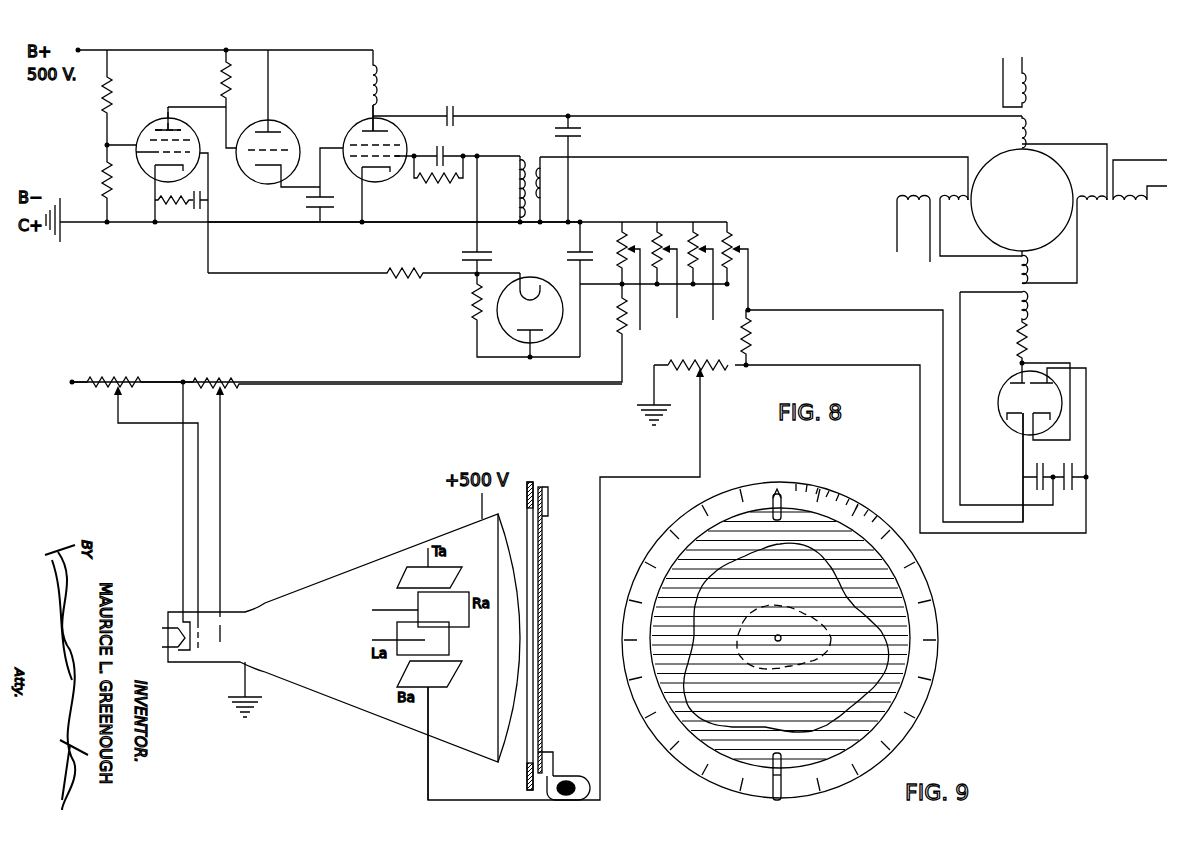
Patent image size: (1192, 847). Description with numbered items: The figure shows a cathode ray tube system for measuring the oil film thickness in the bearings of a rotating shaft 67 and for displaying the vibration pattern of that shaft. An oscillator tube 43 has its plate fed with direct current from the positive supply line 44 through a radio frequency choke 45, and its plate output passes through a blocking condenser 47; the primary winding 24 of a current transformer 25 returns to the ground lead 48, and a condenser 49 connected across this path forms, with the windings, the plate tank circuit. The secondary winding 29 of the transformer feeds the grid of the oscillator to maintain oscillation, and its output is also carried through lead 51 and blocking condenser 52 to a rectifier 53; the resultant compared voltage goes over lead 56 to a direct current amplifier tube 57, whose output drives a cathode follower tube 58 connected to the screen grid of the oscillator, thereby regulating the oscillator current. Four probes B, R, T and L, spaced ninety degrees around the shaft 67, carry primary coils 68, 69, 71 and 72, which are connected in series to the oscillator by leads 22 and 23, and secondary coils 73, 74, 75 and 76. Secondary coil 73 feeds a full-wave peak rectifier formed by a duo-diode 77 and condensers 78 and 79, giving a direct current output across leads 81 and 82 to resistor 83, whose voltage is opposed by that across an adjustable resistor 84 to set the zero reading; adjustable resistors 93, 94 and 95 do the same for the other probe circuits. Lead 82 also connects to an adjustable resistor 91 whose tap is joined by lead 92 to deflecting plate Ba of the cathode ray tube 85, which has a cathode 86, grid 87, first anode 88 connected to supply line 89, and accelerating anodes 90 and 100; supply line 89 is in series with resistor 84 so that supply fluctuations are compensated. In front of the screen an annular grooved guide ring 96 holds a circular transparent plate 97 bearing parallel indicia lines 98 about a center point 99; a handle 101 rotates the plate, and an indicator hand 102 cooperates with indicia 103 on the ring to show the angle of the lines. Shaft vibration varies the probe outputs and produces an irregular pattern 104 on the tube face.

In FIG. 8, the lead 22 is at (815, 157).
In FIG. 8, the lead 23 is at (818, 116).
In FIG. 8, the primary winding 24 is at (543, 192).
In FIG. 8, the current transformer 25 is at (531, 153).
In FIG. 8, the secondary winding 29 is at (516, 180).
In FIG. 8, the oscillator tube 43 is at (397, 138).
In FIG. 8, the positive supply line 44 is at (88, 48).
In FIG. 8, the radio frequency choke 45 is at (380, 88).
In FIG. 8, the blocking condenser 47 is at (456, 108).
In FIG. 8, the ground lead 48 is at (388, 224).
In FIG. 8, the condenser 49 is at (585, 133).
In FIG. 8, the lead 51 is at (477, 193).
In FIG. 8, the blocking condenser 52 is at (488, 254).
In FIG. 8, the rectifier 53 is at (543, 282).
In FIG. 8, the lead 56 is at (308, 272).
In FIG. 8, the direct current amplifier tube 57 is at (160, 120).
In FIG. 8, the cathode follower tube 58 is at (285, 128).
In FIG. 8, the shaft 67 is at (977, 222).
In FIG. 8, the primary coil 68 is at (1030, 270).
In FIG. 8, the primary coil 69 is at (1082, 212).
In FIG. 8, the primary coil 71 is at (1030, 133).
In FIG. 8, the primary coil 72 is at (950, 196).
In FIG. 8, the secondary coil 73 is at (1015, 305).
In FIG. 8, the secondary coil 74 is at (1130, 208).
In FIG. 8, the secondary coil 75 is at (1030, 92).
In FIG. 8, the secondary coil 76 is at (912, 198).
In FIG. 8, the duo-diode 77 is at (1006, 390).
In FIG. 8, the condenser 78 is at (1040, 470).
In FIG. 8, the condenser 79 is at (1070, 492).
In FIG. 8, the lead 81 is at (820, 310).
In FIG. 8, the lead 82 is at (845, 365).
In FIG. 8, the resistor 83 is at (750, 338).
In FIG. 8, the adjustable resistor 84 is at (735, 238).
In FIG. 8, the cathode ray tube 85 is at (365, 567).
In FIG. 8, the cathode 86 is at (185, 657).
In FIG. 8, the grid 87 is at (200, 656).
In FIG. 8, the first anode 88 is at (223, 633).
In FIG. 8, the supply line 89 is at (78, 380).
In FIG. 8, the accelerating anode 90 is at (252, 661).
In FIG. 8, the adjustable resistor 91 is at (697, 360).
In FIG. 8, the lead 92 is at (600, 718).
In FIG. 8, the adjustable resistor 93 is at (700, 232).
In FIG. 8, the adjustable resistor 94 is at (664, 232).
In FIG. 8, the adjustable resistor 95 is at (627, 232).
In FIG. 8, the annular grooved guide ring 96 is at (531, 482).
In FIG. 9, the annular grooved guide ring 96 is at (937, 658).
In FIG. 8, the circular transparent plate 97 is at (542, 543).
In FIG. 9, the circular transparent plate 97 is at (887, 695).
In FIG. 9, the indicia lines 98 is at (897, 625).
In FIG. 9, the center point 99 is at (783, 636).
In FIG. 8, the accelerating anode 100 is at (490, 756).
In FIG. 8, the handle 101 is at (566, 778).
In FIG. 9, the handle 101 is at (782, 797).
In FIG. 8, the indicator hand 102 is at (548, 492).
In FIG. 9, the indicator hand 102 is at (782, 500).
In FIG. 9, the indicia 103 is at (738, 497).
In FIG. 9, the irregular pattern 104 is at (743, 612).